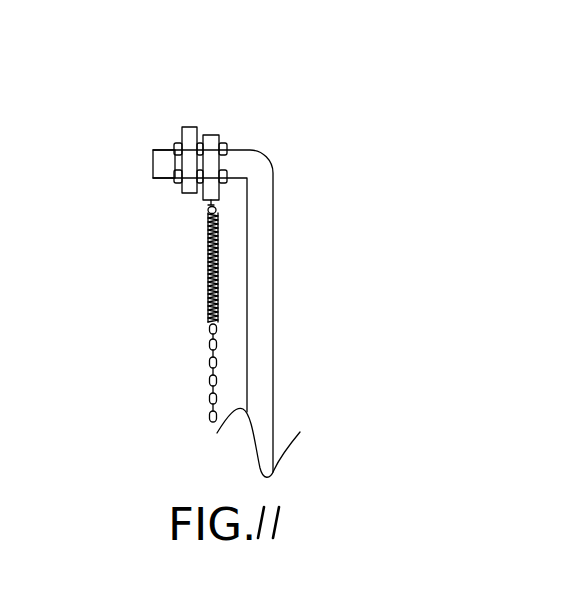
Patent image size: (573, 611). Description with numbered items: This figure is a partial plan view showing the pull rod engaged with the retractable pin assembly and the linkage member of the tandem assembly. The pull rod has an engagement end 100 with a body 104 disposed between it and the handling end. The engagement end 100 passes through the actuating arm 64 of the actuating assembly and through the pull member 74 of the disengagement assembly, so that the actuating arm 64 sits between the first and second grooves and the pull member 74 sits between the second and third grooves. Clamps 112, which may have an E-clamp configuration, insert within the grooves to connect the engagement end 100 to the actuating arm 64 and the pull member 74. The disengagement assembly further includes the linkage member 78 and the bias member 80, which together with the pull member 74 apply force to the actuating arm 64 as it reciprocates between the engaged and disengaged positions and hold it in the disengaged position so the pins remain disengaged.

The engagement end 100 is at (166, 142).
The clamp 112 is at (206, 133).
The pull member 74 is at (221, 132).
The actuating arm 64 is at (180, 196).
The bias member 80 is at (207, 313).
The linkage member 78 is at (210, 388).
The body 104 is at (262, 386).